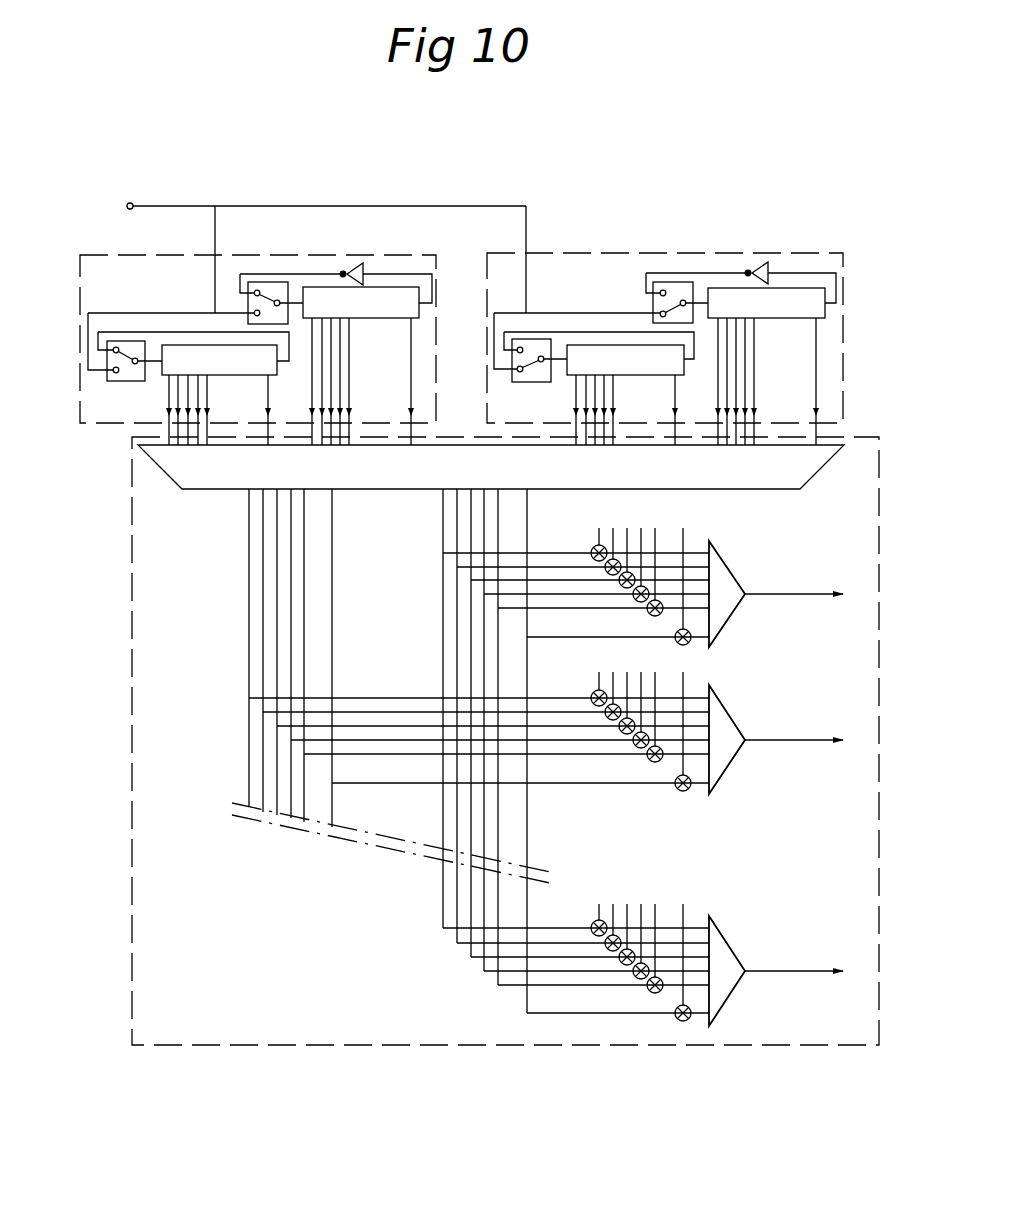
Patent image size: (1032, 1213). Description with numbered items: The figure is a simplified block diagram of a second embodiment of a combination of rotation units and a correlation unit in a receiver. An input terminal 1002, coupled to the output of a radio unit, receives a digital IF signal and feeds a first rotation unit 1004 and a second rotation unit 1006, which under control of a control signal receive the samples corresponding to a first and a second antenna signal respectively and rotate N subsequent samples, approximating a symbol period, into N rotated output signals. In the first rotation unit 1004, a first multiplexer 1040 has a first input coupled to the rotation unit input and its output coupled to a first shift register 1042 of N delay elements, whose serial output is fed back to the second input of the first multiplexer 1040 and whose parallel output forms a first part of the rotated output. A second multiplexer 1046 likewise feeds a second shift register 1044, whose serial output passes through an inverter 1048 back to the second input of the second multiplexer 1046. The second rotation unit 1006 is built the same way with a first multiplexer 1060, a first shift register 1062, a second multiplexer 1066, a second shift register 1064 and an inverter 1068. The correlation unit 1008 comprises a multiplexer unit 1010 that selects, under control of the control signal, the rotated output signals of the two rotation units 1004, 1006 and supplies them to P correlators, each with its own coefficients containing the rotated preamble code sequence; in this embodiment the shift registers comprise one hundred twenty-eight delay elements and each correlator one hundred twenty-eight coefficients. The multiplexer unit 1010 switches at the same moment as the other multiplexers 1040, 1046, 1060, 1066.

The input terminal 1002 is at (136, 191).
The first rotation unit 1004 is at (110, 254).
The second rotation unit 1006 is at (822, 254).
The correlation unit 1008 is at (143, 972).
The multiplexer unit 1010 is at (780, 479).
The first multiplexer 1040 is at (107, 382).
The first shift register 1042 is at (170, 380).
The second shift register 1044 is at (420, 282).
The second multiplexer 1046 is at (270, 282).
The inverter of register 1 1048 is at (360, 263).
The first multiplexer 1060 is at (533, 377).
The first shift register 1062 is at (647, 367).
The second shift register 1064 is at (790, 320).
The second multiplexer 1066 is at (685, 282).
The inverter of register 2 1068 is at (777, 242).